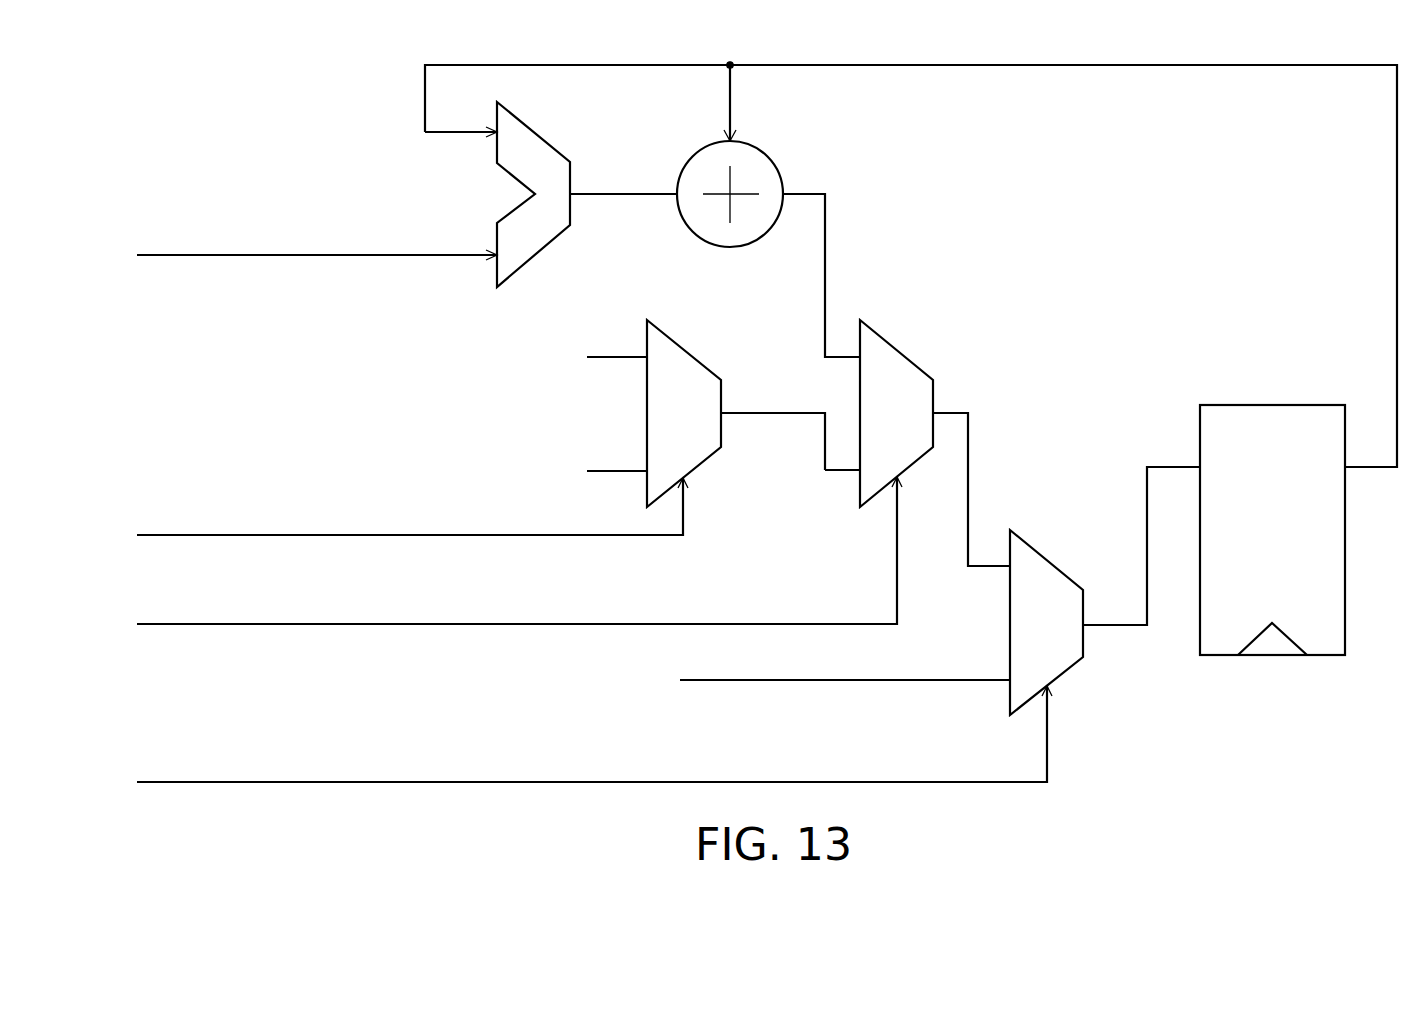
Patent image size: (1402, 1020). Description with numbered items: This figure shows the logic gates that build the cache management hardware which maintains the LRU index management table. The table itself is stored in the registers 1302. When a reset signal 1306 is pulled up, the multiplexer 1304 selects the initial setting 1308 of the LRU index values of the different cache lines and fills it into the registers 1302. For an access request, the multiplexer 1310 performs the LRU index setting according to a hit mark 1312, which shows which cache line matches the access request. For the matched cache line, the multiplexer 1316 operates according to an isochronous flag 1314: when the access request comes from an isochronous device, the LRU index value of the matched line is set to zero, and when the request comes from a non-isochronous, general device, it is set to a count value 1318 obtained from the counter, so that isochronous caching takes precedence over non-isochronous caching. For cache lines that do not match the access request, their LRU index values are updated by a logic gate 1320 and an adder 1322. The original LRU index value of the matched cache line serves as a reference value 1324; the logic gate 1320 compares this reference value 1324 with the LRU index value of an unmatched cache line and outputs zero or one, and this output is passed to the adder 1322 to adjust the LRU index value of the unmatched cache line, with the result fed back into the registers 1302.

The registers 1302 is at (1272, 405).
The multiplexer 1304 is at (1047, 550).
The reset signal 1306 is at (207, 783).
The initial setting 1308 is at (748, 681).
The multiplexer 1310 is at (897, 345).
The hit mark 1312 is at (207, 625).
The isochronous flag 1314 is at (207, 536).
The multiplexer 1316 is at (687, 347).
The count value 1318 is at (617, 352).
The logic gate 1320 is at (533, 130).
The adder 1322 is at (763, 140).
The reference value 1324 is at (207, 256).